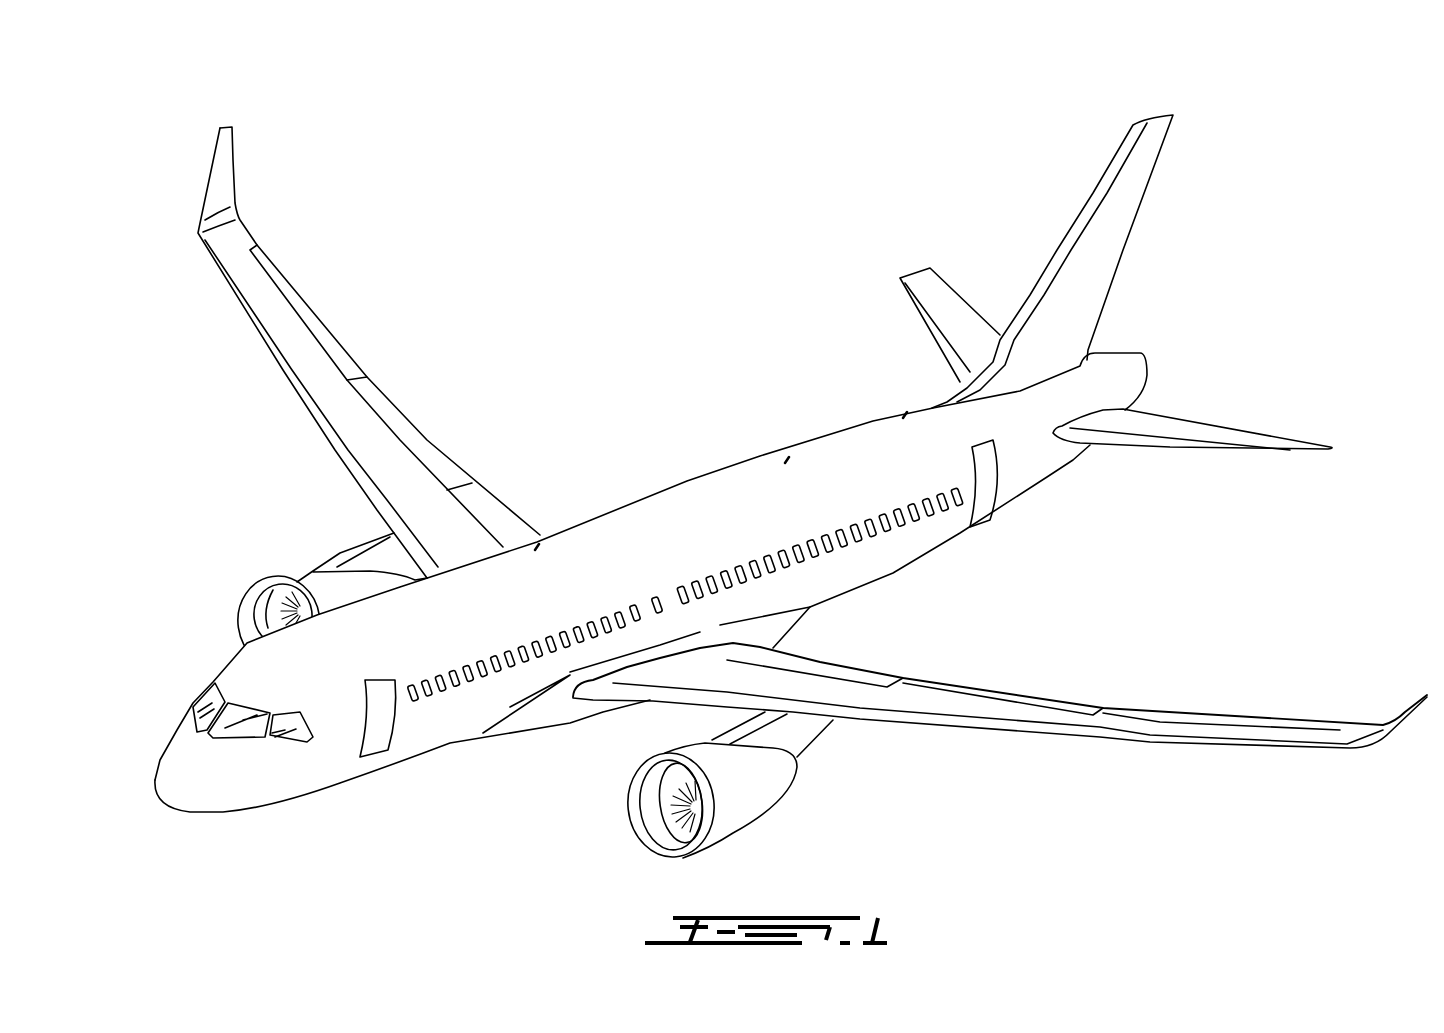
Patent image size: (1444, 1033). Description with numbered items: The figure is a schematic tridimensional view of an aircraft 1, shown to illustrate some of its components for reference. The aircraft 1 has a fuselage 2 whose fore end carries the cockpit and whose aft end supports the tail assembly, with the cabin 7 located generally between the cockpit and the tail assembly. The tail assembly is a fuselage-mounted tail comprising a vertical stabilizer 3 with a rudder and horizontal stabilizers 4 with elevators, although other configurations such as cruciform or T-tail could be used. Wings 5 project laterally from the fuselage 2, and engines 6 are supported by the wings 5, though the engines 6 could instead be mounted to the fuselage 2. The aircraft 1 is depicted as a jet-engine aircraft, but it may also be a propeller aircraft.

The aircraft 1 is at (222, 100).
The fuselage 2 is at (437, 732).
The vertical stabilizer 3 is at (1112, 200).
The horizontal stabilizers 4 is at (942, 310).
The wings 5 is at (400, 462).
The engines 6 is at (310, 578).
The cabin 7 is at (668, 510).